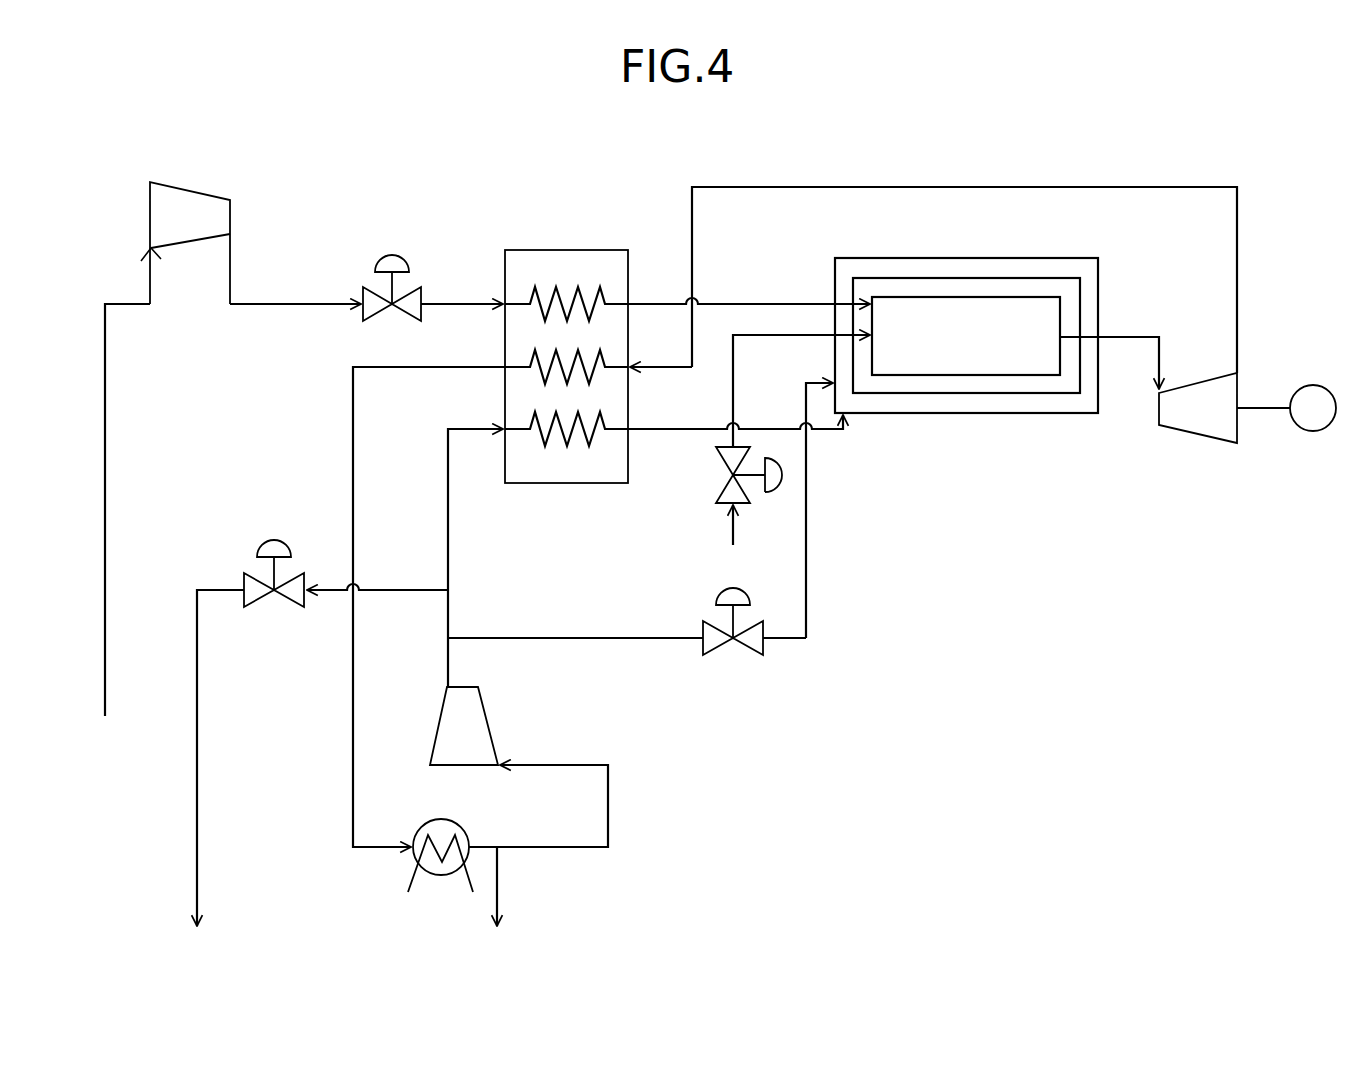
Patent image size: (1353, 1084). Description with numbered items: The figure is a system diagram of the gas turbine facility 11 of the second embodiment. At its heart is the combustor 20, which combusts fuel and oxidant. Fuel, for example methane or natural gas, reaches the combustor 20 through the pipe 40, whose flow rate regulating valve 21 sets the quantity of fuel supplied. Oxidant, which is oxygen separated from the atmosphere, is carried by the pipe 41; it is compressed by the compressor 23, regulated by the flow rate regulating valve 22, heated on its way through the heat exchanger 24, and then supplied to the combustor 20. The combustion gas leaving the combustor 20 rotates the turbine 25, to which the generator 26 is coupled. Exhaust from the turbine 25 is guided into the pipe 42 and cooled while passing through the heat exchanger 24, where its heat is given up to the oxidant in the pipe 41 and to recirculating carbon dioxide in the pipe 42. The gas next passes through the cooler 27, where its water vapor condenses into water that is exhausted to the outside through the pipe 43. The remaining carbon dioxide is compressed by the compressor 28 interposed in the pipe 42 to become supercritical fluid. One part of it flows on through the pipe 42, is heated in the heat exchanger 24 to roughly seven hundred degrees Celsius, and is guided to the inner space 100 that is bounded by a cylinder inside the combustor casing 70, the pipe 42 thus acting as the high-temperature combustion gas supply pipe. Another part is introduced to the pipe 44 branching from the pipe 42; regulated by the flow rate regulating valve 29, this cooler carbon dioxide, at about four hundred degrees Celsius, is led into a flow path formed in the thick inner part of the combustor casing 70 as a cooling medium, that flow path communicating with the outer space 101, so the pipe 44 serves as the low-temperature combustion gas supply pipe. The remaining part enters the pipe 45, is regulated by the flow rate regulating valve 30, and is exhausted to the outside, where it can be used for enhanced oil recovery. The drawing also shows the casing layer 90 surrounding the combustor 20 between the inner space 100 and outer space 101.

The gas turbine facility 11 is at (580, 167).
The combustor 20 is at (905, 297).
The flow rate regulating valve 21 is at (716, 480).
The flow rate regulating valve 22 is at (368, 292).
The compressor 23 is at (192, 190).
The heat exchanger 24 is at (569, 250).
The turbine 25 is at (1195, 436).
The generator 26 is at (1316, 432).
The cooler 27 is at (438, 819).
The compressor 28 is at (495, 720).
The flow rate regulating valve 29 is at (748, 654).
The flow rate regulating valve 30 is at (250, 576).
The pipe 40 is at (731, 397).
The pipe 41 is at (300, 308).
The pipe 42 is at (446, 492).
The pipe 43 is at (500, 896).
The pipe 44 is at (644, 642).
The pipe 45 is at (400, 590).
The combustor casing 70 is at (1015, 266).
The combustor casing 90 is at (965, 278).
The inner space 100 is at (850, 292).
The outer space 101 is at (1037, 270).